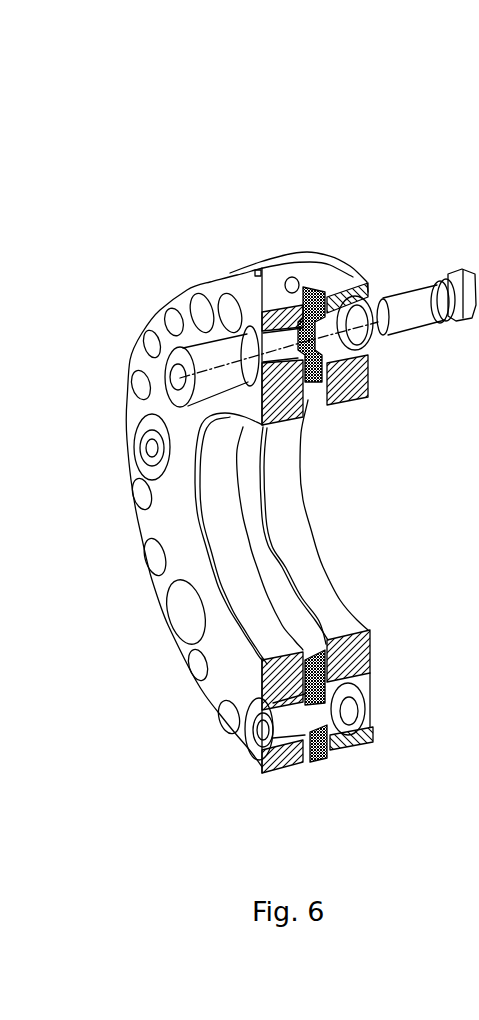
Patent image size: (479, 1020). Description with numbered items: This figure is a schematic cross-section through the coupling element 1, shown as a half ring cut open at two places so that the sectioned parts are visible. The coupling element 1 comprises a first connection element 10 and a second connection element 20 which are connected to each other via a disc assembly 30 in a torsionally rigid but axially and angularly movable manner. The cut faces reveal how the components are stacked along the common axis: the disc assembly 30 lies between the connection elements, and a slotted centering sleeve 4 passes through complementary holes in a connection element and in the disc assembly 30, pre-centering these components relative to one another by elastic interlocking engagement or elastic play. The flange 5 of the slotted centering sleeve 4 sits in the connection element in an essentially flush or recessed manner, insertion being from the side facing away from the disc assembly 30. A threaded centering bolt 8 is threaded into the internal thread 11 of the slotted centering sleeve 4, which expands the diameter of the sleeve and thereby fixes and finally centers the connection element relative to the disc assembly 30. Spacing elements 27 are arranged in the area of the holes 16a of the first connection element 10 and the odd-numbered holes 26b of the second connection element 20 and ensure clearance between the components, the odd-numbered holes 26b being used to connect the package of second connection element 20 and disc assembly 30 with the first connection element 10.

The coupling element 1 is at (250, 465).
The first connection element 10 is at (233, 283).
The slotted centering sleeve 4 is at (212, 365).
The flange 5 is at (178, 484).
The threaded centering bolt 8 is at (423, 318).
The internal thread 11 is at (316, 740).
The holes 16a is at (283, 353).
The second connection element 20 is at (343, 273).
The odd-numbered holes 26b is at (366, 400).
The spacing elements 27 is at (366, 305).
The disc assembly 30 is at (305, 288).